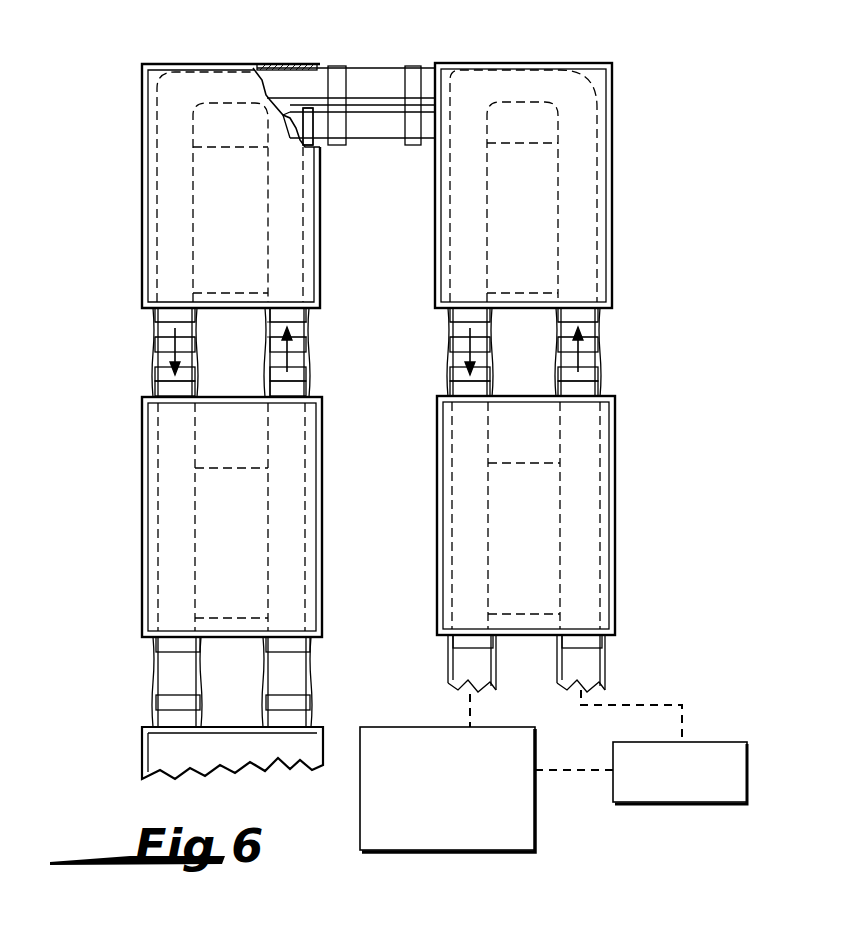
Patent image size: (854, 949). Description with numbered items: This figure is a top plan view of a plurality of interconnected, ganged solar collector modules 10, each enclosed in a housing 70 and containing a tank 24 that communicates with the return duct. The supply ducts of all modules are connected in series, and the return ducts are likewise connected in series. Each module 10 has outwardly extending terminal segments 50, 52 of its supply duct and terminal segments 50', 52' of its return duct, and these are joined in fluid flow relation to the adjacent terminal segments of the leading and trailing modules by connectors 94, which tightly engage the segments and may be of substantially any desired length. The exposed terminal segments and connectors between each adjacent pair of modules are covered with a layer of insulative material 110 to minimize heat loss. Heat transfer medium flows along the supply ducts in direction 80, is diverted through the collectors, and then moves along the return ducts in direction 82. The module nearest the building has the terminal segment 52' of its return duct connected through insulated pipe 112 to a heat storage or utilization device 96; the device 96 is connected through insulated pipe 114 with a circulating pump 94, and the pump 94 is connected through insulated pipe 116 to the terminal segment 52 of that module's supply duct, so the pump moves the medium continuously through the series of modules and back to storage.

The collector module 10 is at (379, 421).
The tank 24 is at (230, 147).
The supply duct terminal segment 50 is at (374, 350).
The return duct terminal segment 50' is at (465, 398).
The supply duct terminal segment 52 is at (375, 380).
The return duct terminal segment 52' is at (379, 417).
The housing 70 is at (142, 183).
The flow direction in supply duct 80 is at (172, 360).
The flow direction in return duct 82 is at (291, 346).
The connector / circulating pump 94 is at (368, 75).
The heat storage device 96 is at (535, 843).
The insulative material layer 110 is at (398, 67).
The insulated pipe 112 is at (467, 708).
The insulated pipe 114 is at (591, 772).
The insulated pipe 116 is at (658, 703).